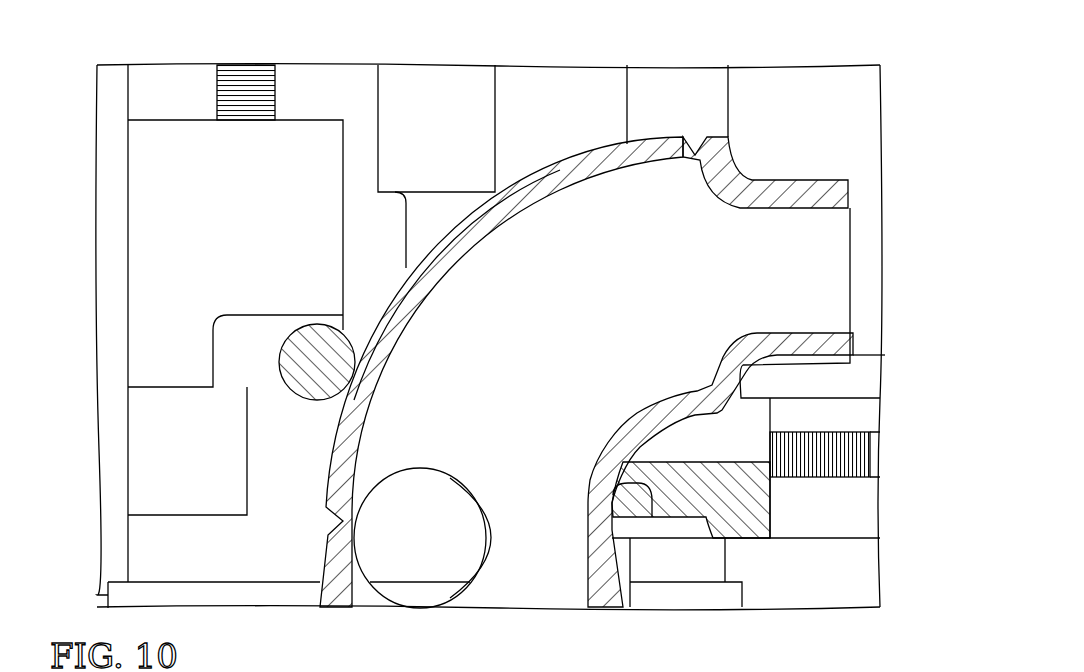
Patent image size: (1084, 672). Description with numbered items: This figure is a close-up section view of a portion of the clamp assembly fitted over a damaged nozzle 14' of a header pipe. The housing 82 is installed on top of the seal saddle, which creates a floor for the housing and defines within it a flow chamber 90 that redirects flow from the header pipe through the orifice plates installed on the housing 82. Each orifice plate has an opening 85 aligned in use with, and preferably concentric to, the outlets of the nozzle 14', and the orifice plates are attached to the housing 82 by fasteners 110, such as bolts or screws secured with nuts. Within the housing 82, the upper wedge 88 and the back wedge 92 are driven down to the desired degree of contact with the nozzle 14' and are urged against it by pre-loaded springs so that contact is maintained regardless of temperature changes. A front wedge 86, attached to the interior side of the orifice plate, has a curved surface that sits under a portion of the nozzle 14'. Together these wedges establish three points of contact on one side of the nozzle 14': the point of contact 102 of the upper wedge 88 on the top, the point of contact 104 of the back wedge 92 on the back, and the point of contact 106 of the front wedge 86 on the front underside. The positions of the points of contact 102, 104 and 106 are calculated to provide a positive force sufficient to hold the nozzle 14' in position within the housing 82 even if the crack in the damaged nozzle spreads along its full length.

The nozzle 14' is at (720, 321).
The housing 82 is at (110, 150).
The opening 85 is at (870, 213).
The front wedge 86 is at (765, 537).
The upper wedge 88 is at (438, 112).
The flow chamber 90 is at (273, 542).
The back wedge 92 is at (177, 291).
The point of contact 102 is at (610, 143).
The point of contact 104 is at (313, 325).
The point of contact 106 is at (388, 307).
The fastener 110 is at (257, 85).